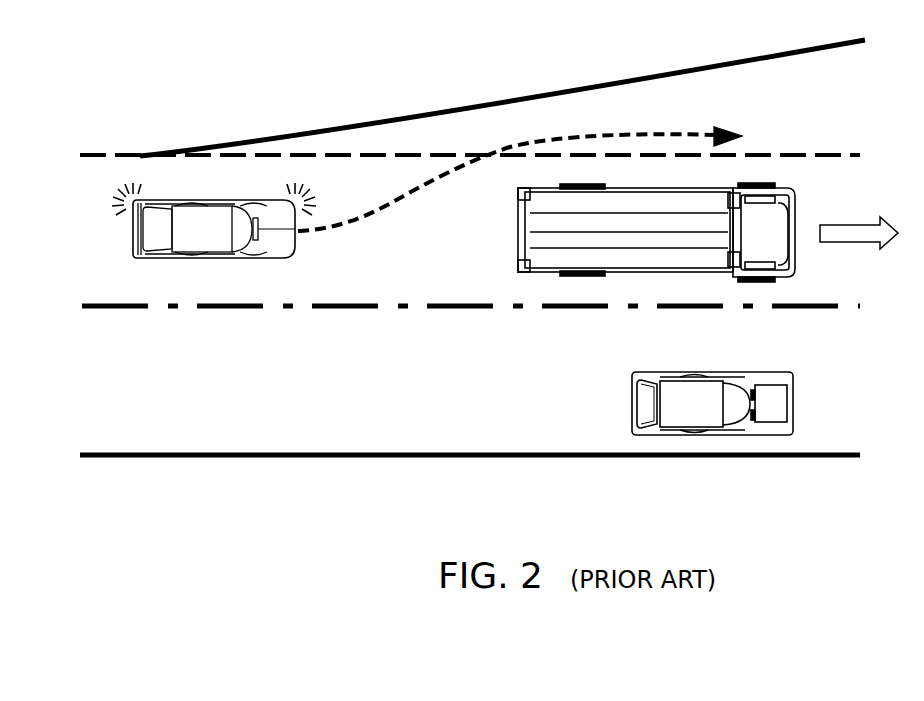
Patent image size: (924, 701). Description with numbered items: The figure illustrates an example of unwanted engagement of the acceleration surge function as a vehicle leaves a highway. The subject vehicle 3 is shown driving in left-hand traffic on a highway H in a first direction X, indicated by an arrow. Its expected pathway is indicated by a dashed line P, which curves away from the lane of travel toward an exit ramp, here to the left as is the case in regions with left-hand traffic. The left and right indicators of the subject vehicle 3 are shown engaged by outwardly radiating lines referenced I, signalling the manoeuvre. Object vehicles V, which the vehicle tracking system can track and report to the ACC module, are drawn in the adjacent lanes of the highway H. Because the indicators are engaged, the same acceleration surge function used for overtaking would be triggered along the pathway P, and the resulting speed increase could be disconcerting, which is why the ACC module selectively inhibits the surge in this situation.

The subject vehicle 3 is at (203, 231).
The indicator engagement lines I is at (277, 190).
The vehicle pathway P is at (403, 200).
The highway H is at (282, 418).
The object vehicle V is at (772, 248).
The first direction X is at (859, 223).